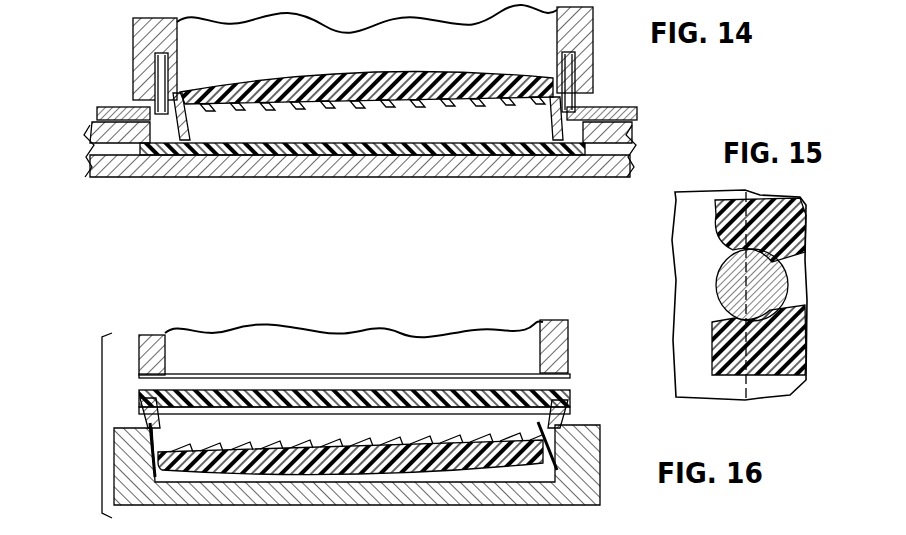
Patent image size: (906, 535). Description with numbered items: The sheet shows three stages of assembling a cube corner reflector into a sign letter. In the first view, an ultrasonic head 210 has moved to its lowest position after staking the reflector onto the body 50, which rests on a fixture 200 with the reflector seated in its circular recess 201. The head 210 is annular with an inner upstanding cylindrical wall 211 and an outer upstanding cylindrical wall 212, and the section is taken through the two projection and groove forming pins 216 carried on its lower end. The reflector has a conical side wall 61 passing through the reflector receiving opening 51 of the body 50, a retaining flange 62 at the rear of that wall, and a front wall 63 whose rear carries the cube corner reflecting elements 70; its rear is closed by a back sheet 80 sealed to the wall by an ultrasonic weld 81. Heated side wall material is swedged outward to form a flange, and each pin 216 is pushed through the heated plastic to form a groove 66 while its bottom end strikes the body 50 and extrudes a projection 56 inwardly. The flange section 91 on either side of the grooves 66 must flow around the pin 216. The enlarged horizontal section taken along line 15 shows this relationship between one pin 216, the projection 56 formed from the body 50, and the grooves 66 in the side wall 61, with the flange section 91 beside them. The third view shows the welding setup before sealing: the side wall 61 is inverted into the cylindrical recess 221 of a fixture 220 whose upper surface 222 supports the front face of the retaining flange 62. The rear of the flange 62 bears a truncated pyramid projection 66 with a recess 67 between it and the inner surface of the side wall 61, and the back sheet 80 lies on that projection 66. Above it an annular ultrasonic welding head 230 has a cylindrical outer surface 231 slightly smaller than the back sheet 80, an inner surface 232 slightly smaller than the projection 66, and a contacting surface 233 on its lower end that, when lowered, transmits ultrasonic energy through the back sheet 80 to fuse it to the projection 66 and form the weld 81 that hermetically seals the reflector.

In FIG. 14, the section line 15 is at (308, 94).
In FIG. 14, the body 50 is at (365, 94).
In FIG. 15, the body 50 is at (736, 292).
In FIG. 15, the reflector receiving opening 51 is at (740, 197).
In FIG. 15, the projection 56 is at (744, 259).
In FIG. 14, the side wall 61 is at (185, 110).
In FIG. 15, the side wall 61 is at (777, 321).
In FIG. 16, the side wall 61 is at (153, 430).
In FIG. 14, the retaining flange 62 is at (143, 133).
In FIG. 16, the retaining flange 62 is at (147, 417).
In FIG. 16, the front wall 63 is at (350, 447).
In FIG. 15, the groove 66 is at (787, 287).
In FIG. 16, the groove 66 is at (357, 411).
In FIG. 16, the recess 67 is at (167, 407).
In FIG. 14, the reflecting elements 70 is at (217, 100).
In FIG. 16, the reflecting elements 70 is at (350, 446).
In FIG. 14, the back sheet 80 is at (362, 174).
In FIG. 16, the back sheet 80 is at (312, 400).
In FIG. 14, the ultrasonic weld 81 is at (547, 147).
In FIG. 14, the flange section 91 is at (150, 102).
In FIG. 15, the flange section 91 is at (720, 225).
In FIG. 14, the fixture 200 is at (341, 168).
In FIG. 14, the recess 201 is at (90, 147).
In FIG. 14, the ultrasonic head 210 is at (503, 44).
In FIG. 14, the inner upstanding cylindrical wall 211 is at (557, 43).
In FIG. 14, the outer upstanding cylindrical wall 212 is at (573, 50).
In FIG. 14, the projection and groove forming pin 216 is at (570, 70).
In FIG. 15, the projection and groove forming pin 216 is at (733, 280).
In FIG. 16, the fixture 220 is at (381, 458).
In FIG. 16, the cylindrical recess 221 is at (380, 458).
In FIG. 16, the upper surface 222 is at (590, 425).
In FIG. 16, the ultrasonic welding head 230 is at (210, 350).
In FIG. 16, the cylindrical outer surface 231 is at (532, 332).
In FIG. 16, the inner surface 232 is at (540, 347).
In FIG. 16, the contacting surface 233 is at (563, 380).